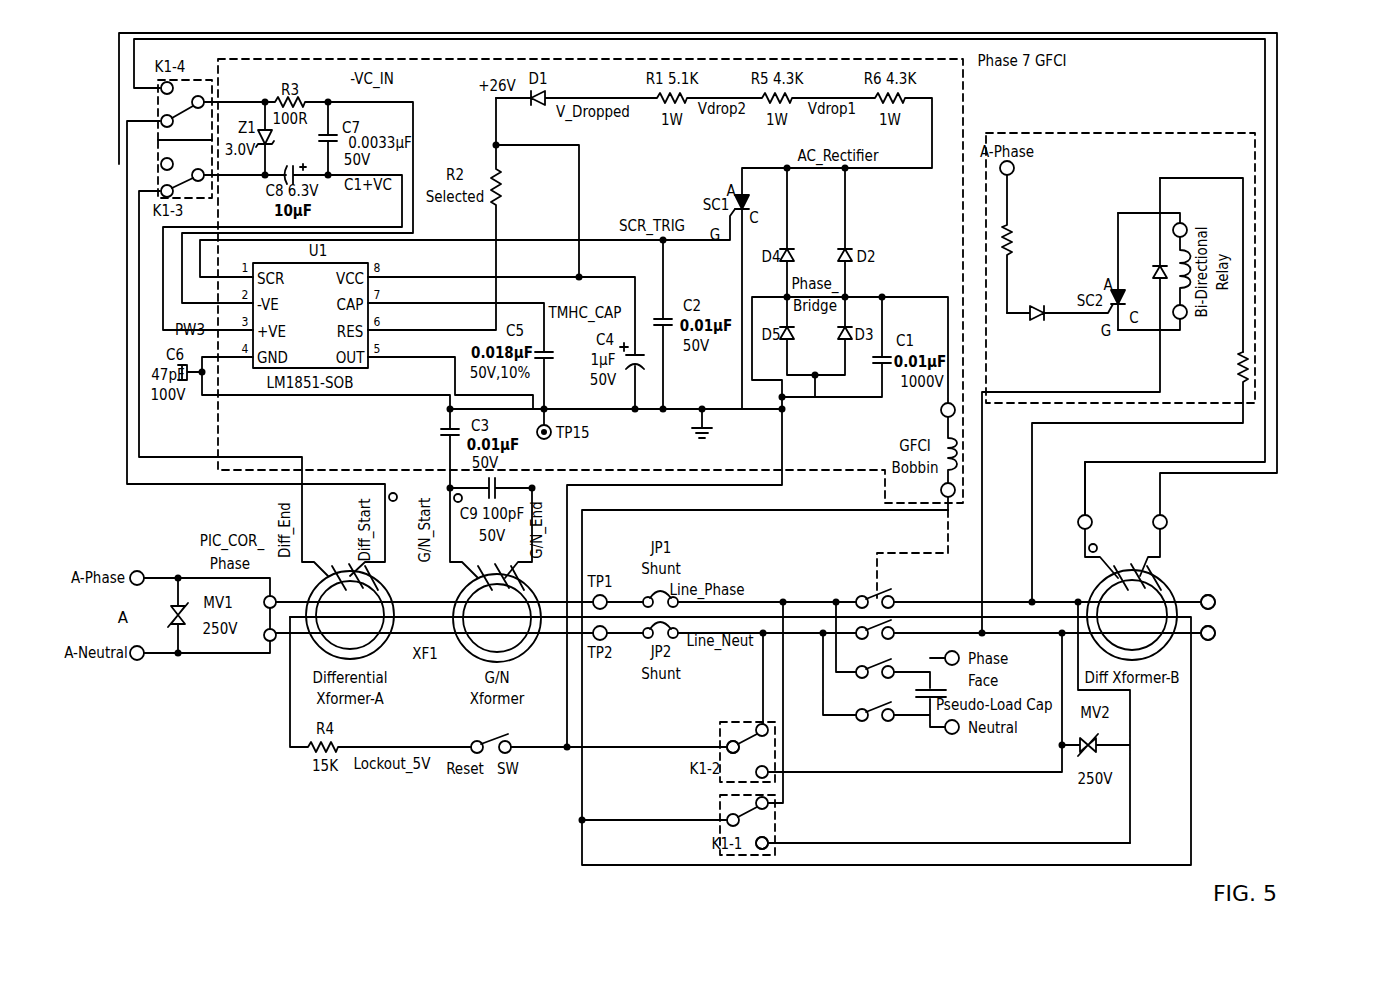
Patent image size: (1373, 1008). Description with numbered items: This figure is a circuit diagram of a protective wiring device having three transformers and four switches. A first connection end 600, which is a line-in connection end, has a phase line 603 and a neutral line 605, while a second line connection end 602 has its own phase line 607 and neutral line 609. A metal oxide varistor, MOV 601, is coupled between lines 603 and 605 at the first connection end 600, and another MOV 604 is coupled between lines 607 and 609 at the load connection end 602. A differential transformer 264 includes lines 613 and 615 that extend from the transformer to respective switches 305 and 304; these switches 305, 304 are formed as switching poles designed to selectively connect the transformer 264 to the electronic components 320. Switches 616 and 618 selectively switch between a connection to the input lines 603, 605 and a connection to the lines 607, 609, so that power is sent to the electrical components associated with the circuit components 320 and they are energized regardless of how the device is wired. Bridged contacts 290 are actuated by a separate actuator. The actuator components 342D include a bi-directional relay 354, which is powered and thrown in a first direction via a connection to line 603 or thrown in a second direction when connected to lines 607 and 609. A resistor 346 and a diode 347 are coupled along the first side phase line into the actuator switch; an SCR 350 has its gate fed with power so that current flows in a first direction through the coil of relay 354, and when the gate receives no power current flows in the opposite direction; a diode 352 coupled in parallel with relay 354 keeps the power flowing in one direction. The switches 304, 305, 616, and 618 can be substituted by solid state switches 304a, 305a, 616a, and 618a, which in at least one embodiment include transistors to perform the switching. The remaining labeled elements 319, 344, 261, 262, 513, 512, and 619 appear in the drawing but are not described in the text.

The solid state switch 304a is at (160, 90).
The switch 304 is at (157, 103).
The solid state switch 305a is at (160, 162).
The switch 305 is at (157, 178).
The supply voltage connection 319 is at (372, 275).
The electronic components 320 is at (968, 120).
The actuator components 342D is at (1205, 150).
The resistor 346 is at (1012, 229).
The diode 347 is at (1036, 320).
The SCR 350 is at (1100, 276).
The diode 352 is at (1155, 265).
The bi-directional relay 354 is at (1183, 246).
The resistor 344 is at (1240, 351).
The differential transformer A 261 is at (314, 656).
The grounded neutral transformer 262 is at (450, 735).
The differential transformer 264 is at (1170, 582).
The line 613 is at (1085, 479).
The first connection end 600 is at (158, 616).
The MOV 601 is at (187, 656).
The phase line 603 is at (203, 577).
The neutral line 605 is at (235, 657).
The bridged contacts 290 is at (889, 592).
The phase line 607 is at (1197, 598).
The neutral line 609 is at (1203, 641).
The line connection end 602 is at (1264, 612).
The lockout resistor line 513 is at (344, 768).
The reset switch 512 is at (490, 757).
The conductor 619 is at (633, 750).
The switch 616 is at (748, 764).
The solid state switch 616a is at (722, 750).
The switch 618 is at (747, 840).
The solid state switch 618a is at (777, 816).
The MOV 604 is at (1090, 758).
The line 615 is at (914, 688).